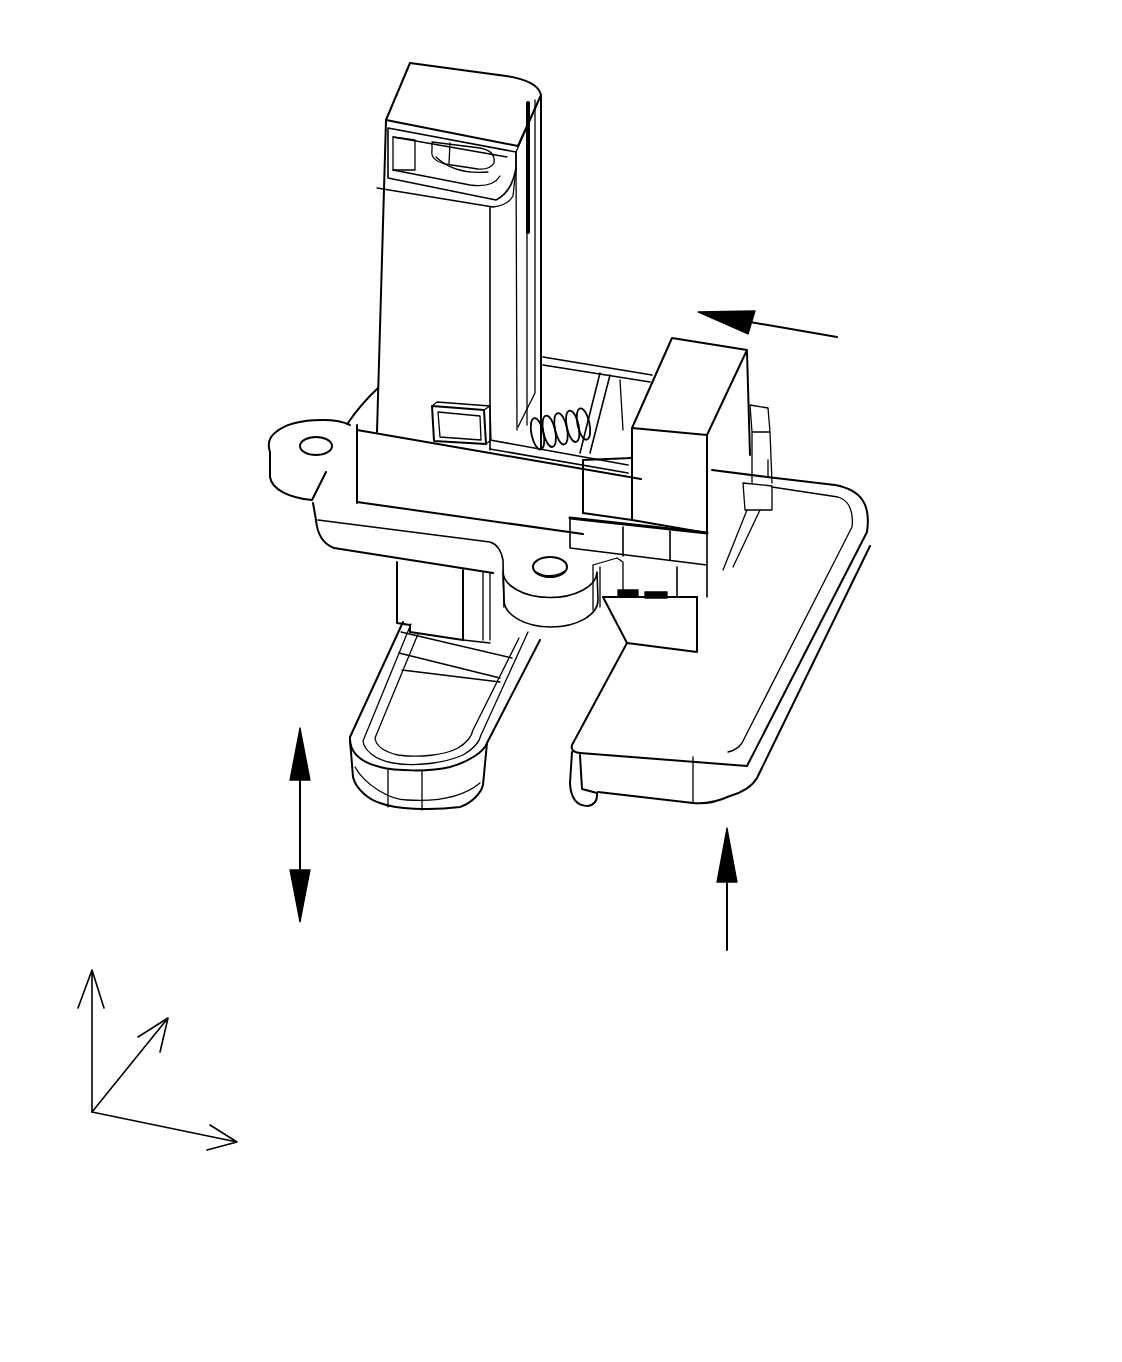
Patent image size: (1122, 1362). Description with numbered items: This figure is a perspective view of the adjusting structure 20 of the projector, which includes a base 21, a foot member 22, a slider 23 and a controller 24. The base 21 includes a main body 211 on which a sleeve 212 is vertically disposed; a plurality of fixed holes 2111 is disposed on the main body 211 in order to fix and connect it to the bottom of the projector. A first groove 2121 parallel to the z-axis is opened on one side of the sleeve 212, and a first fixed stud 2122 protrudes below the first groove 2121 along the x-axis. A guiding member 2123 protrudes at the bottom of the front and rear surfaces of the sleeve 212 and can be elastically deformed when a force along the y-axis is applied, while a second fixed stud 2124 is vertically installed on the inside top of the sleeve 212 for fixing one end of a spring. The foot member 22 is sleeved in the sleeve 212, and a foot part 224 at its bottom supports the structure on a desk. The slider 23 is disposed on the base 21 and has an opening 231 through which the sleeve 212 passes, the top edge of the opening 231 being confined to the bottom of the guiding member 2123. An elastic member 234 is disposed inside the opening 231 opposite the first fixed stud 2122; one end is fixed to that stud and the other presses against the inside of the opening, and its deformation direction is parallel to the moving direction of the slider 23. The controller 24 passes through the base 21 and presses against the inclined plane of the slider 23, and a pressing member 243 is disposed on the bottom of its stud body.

The adjusting structure 20 is at (272, 86).
The base 21 is at (270, 445).
The main body 211 is at (337, 503).
The fixed holes 2111 is at (316, 440).
The sleeve 212 is at (405, 228).
The first groove 2121 is at (528, 188).
The first fixed stud 2122 is at (548, 393).
The guiding member 2123 is at (455, 428).
The second fixed stud 2124 is at (410, 153).
The foot member 22 is at (423, 588).
The foot part 224 is at (447, 790).
The slider 23 is at (757, 403).
The opening 231 is at (574, 380).
The elastic member 234 is at (593, 373).
The controller 24 is at (630, 613).
The pressing member 243 is at (782, 682).